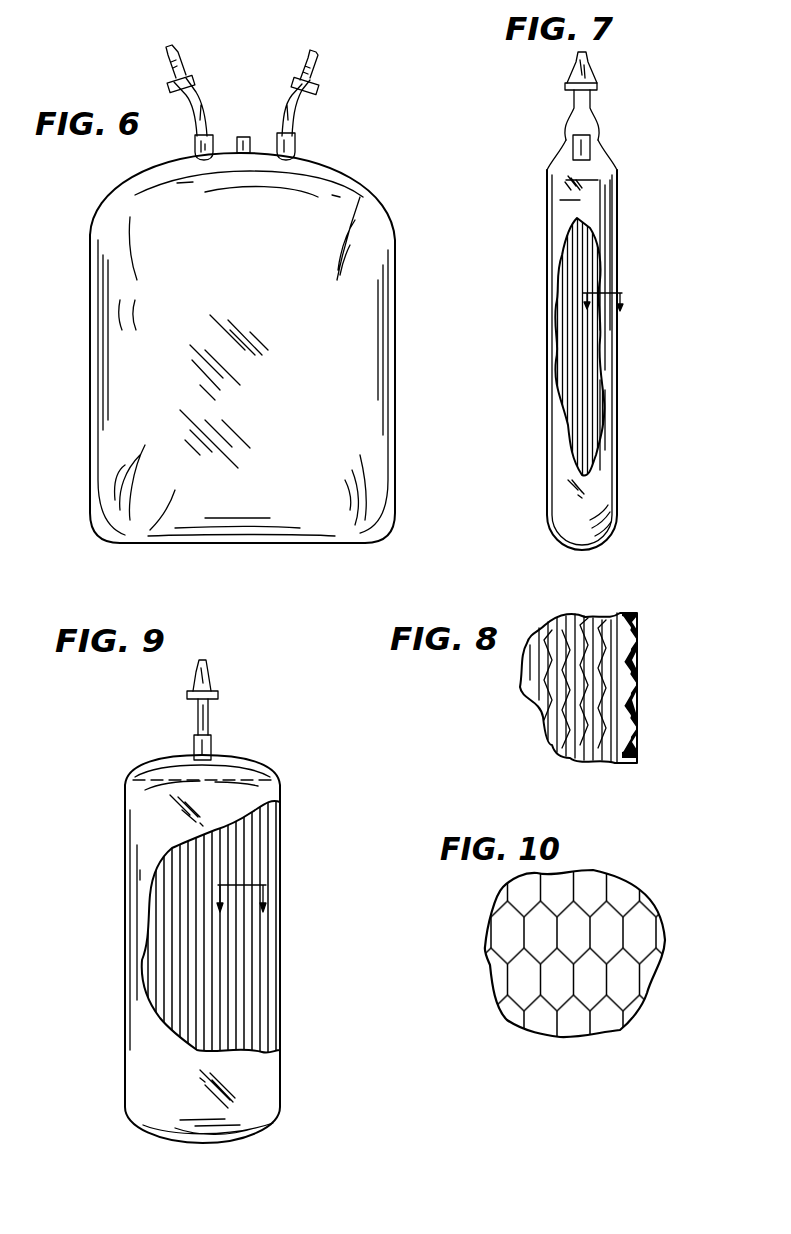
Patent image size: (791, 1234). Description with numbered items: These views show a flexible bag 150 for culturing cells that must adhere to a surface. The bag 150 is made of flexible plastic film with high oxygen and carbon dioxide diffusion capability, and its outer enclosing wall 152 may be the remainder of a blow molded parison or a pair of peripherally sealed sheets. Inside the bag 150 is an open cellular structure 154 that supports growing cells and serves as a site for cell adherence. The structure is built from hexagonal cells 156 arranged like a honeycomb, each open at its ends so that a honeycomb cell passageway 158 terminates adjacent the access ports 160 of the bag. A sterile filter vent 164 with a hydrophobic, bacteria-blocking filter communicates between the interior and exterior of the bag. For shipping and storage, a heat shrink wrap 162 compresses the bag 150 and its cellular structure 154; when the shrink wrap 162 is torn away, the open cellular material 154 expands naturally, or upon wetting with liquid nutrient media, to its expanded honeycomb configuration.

In FIG. 6, the flexible bag 150 is at (271, 294).
In FIG. 7, the flexible bag 150 is at (610, 301).
In FIG. 9, the flexible bag 150 is at (198, 901).
In FIG. 6, the outer enclosing wall 152 is at (367, 267).
In FIG. 7, the cellular structure 154 is at (596, 378).
In FIG. 9, the cellular structure 154 is at (243, 992).
In FIG. 8, the hexagonal cells 156 is at (598, 616).
In FIG. 10, the hexagonal cells 156 is at (645, 915).
In FIG. 9, the honeycomb cell passageway 158 is at (250, 778).
In FIG. 10, the honeycomb cell passageway 158 is at (571, 953).
In FIG. 9, the access ports 160 is at (190, 746).
In FIG. 7, the heat shrink wrap 162 is at (603, 146).
In FIG. 6, the sterile filter vent 164 is at (243, 137).